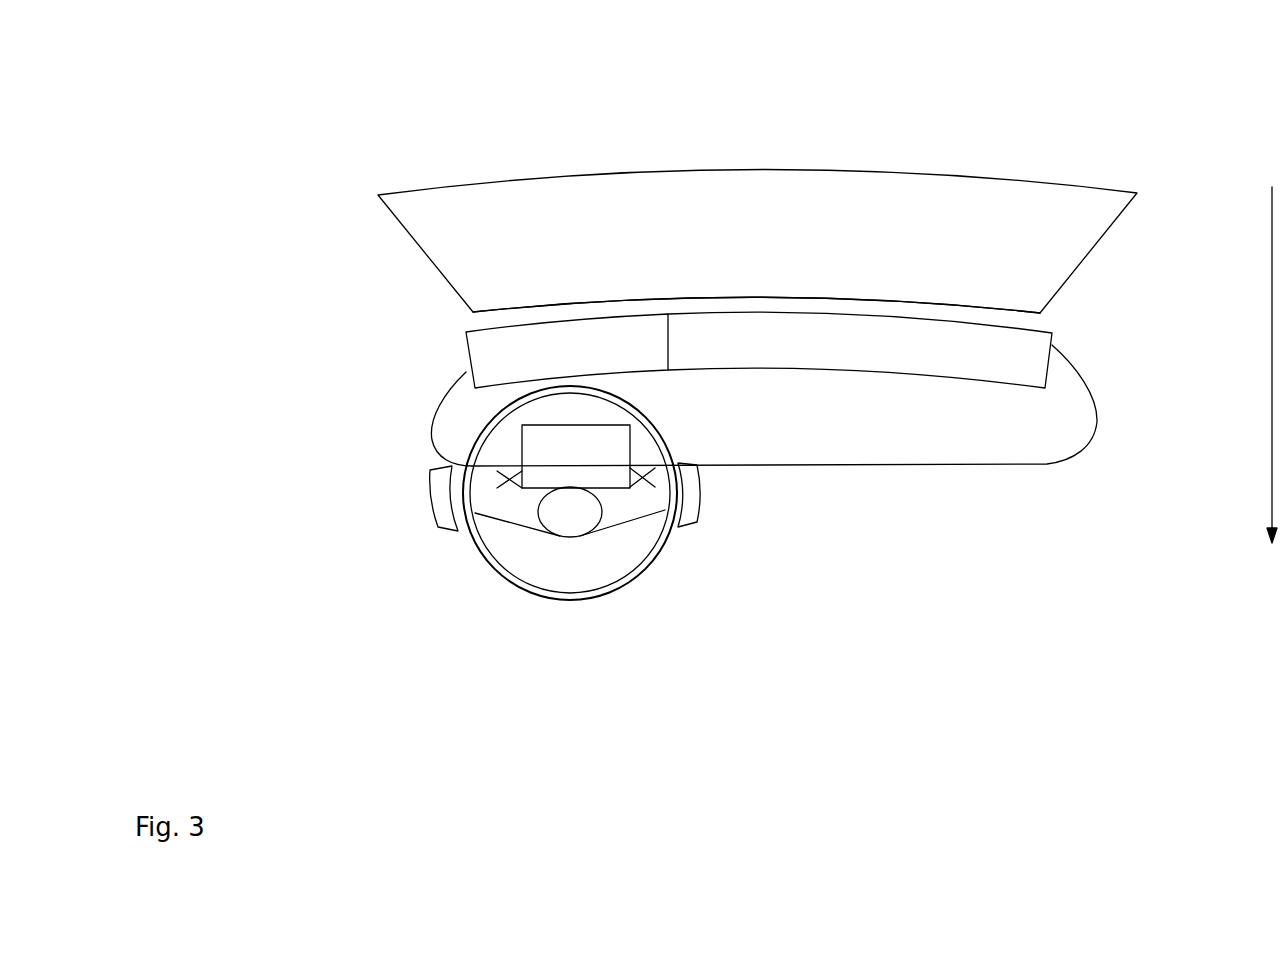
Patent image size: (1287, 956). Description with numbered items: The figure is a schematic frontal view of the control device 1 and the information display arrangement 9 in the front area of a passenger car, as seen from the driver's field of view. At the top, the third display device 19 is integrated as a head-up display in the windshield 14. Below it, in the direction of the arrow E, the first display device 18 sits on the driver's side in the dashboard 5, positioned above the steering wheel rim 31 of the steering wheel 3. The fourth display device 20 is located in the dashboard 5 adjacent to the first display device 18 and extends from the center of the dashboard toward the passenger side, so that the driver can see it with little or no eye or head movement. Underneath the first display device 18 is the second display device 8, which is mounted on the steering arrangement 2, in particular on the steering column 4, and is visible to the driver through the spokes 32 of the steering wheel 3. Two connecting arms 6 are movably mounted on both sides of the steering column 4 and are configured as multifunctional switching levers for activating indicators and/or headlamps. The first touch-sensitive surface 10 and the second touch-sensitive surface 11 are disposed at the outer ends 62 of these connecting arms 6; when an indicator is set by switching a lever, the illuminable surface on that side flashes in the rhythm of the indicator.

The control device 1 is at (442, 527).
The steering arrangement 2 is at (673, 533).
The steering wheel 3 is at (659, 533).
The steering column 4 is at (753, 537).
The dashboard 5 is at (1025, 430).
The connecting arms 6 is at (455, 492).
The second display device 8 is at (586, 449).
The information display arrangement 9 is at (346, 114).
The first touch-sensitive surface 10 is at (432, 505).
The second touch-sensitive surface 11 is at (700, 494).
The windshield 14 is at (553, 230).
The first display device 18 is at (527, 355).
The third display device 19 is at (655, 247).
The fourth display device 20 is at (983, 352).
The steering wheel rim 31 is at (638, 565).
The spokes 32 is at (510, 502).
The outer ends 62 is at (609, 468).